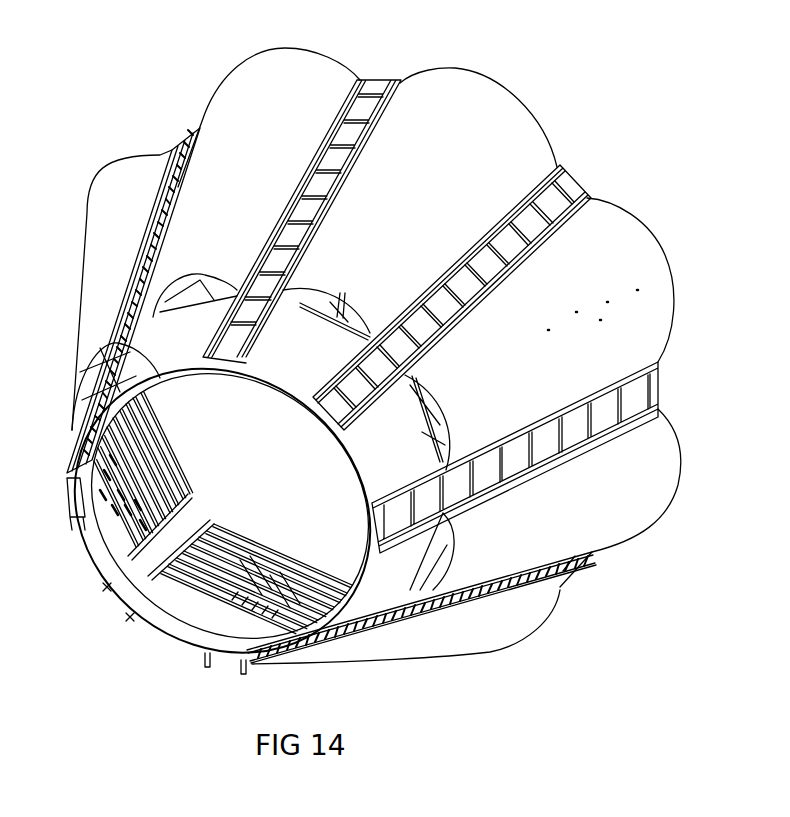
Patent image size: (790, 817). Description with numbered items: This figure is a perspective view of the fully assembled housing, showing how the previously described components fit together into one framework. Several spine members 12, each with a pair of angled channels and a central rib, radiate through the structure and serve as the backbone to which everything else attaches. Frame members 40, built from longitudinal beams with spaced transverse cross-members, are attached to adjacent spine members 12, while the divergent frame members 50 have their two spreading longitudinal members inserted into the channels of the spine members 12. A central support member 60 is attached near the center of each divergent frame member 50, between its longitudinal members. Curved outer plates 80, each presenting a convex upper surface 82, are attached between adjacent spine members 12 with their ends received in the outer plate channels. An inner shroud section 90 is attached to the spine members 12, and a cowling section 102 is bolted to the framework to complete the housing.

The spine member 12 is at (358, 80).
The frame member 40 is at (577, 165).
The divergent frame member 50 is at (178, 445).
The central support member 60 is at (443, 410).
The outer plate 80 is at (618, 235).
The convex upper surface 82 is at (566, 300).
The inner shroud section 90 is at (293, 357).
The cowling section 102 is at (183, 627).